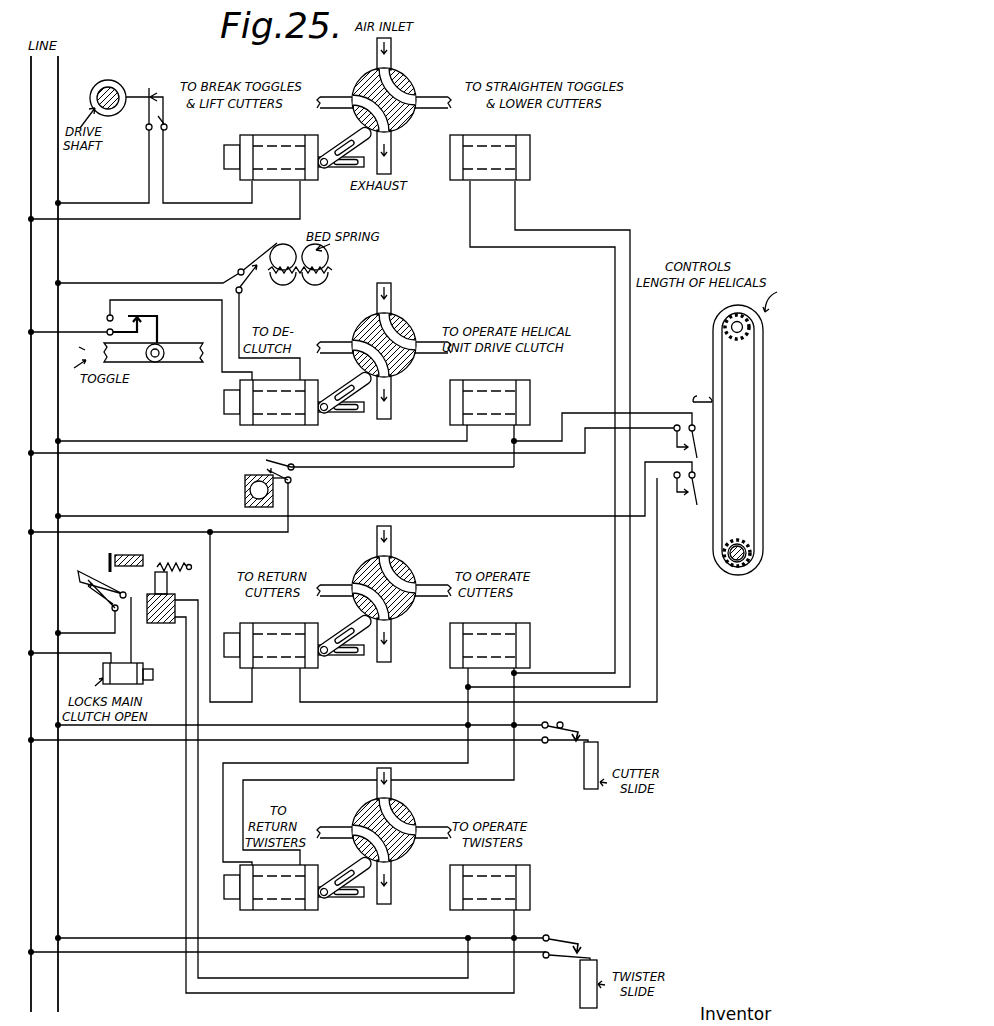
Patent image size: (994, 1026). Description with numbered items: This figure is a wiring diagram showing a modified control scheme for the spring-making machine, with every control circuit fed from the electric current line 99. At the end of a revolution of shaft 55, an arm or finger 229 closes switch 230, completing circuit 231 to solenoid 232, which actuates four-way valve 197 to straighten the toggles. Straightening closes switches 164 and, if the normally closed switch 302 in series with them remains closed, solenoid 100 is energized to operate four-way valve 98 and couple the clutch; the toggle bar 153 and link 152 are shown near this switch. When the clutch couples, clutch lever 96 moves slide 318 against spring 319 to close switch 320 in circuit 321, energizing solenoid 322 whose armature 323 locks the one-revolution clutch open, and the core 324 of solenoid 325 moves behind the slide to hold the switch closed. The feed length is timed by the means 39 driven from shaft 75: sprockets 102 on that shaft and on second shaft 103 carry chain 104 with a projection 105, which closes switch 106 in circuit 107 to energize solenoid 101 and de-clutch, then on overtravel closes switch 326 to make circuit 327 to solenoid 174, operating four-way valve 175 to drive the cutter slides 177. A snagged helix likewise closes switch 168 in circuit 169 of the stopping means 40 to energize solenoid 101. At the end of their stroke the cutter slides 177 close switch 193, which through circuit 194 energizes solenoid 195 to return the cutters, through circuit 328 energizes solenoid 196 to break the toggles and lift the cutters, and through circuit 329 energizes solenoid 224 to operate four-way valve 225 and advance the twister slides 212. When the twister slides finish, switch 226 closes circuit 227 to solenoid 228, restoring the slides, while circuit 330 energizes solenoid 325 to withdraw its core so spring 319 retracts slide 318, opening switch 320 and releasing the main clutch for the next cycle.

The shaft 55 is at (110, 86).
The arm or finger 229 is at (143, 89).
The switch 230 is at (158, 120).
The solenoid 232 is at (275, 180).
The circuit 231 is at (186, 204).
The electric current line 99 is at (44, 207).
The four-way valve 197 is at (404, 90).
The solenoid 196 is at (492, 180).
The normally closed electric switch 302 is at (179, 308).
The switch 164 is at (105, 319).
The link 152 is at (166, 337).
The toggle bar 153 is at (104, 353).
The four-way valve 98 is at (404, 334).
The solenoid 100 is at (250, 427).
The solenoid 101 is at (492, 380).
The circuit 107 is at (390, 451).
The circuit 328 is at (630, 300).
The second shaft 103 is at (731, 325).
The sprockets 102 is at (726, 340).
The projection 105 is at (701, 401).
The switch 106 is at (677, 447).
The switch 326 is at (686, 493).
The circuit 327 is at (657, 548).
The chain 104 is at (713, 549).
The shaft 75 is at (729, 566).
The means for controlling the length of feed 39 is at (730, 581).
The means for stopping the feed 40 is at (238, 493).
The switch 168 is at (294, 472).
The circuit 169 is at (365, 467).
The slide 318 is at (106, 568).
The clutch lever 96 is at (132, 556).
The spring 319 is at (192, 564).
The core 324 is at (167, 590).
The solenoid 325 is at (175, 606).
The switch 320 is at (88, 606).
The circuit 321 is at (82, 649).
The solenoid 322 is at (128, 668).
The movable armature 323 is at (152, 672).
The four-way valve 175 is at (406, 572).
The solenoid 174 is at (280, 668).
The solenoid 195 is at (516, 622).
The circuit 194 is at (392, 740).
The switch 193 is at (578, 734).
The cutter slide 177 is at (586, 789).
The circuit 329 is at (294, 779).
The circuit 330 is at (198, 830).
The four-way valve 225 is at (408, 822).
The solenoid 224 is at (276, 910).
The solenoid 228 is at (494, 910).
The electric circuit 227 is at (412, 952).
The switch 226 is at (570, 942).
The twister slide 212 is at (580, 994).